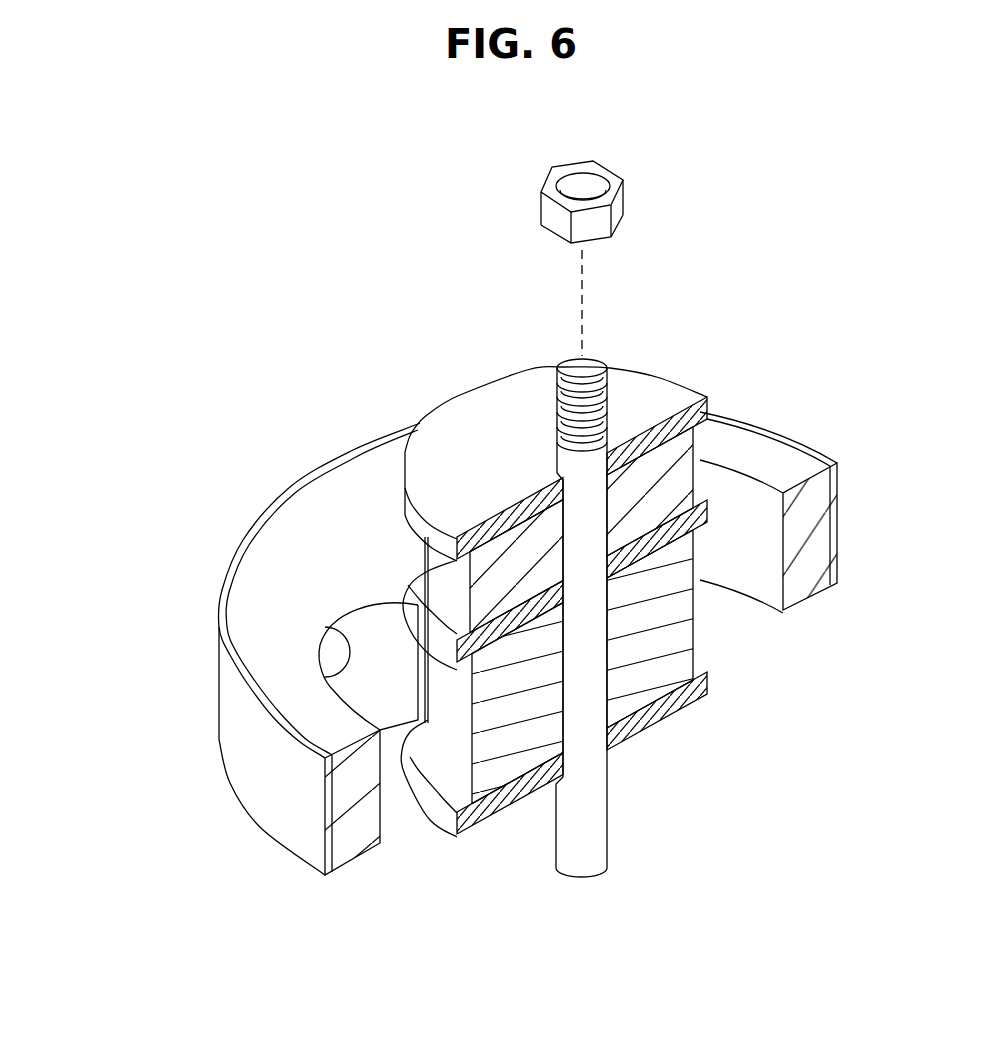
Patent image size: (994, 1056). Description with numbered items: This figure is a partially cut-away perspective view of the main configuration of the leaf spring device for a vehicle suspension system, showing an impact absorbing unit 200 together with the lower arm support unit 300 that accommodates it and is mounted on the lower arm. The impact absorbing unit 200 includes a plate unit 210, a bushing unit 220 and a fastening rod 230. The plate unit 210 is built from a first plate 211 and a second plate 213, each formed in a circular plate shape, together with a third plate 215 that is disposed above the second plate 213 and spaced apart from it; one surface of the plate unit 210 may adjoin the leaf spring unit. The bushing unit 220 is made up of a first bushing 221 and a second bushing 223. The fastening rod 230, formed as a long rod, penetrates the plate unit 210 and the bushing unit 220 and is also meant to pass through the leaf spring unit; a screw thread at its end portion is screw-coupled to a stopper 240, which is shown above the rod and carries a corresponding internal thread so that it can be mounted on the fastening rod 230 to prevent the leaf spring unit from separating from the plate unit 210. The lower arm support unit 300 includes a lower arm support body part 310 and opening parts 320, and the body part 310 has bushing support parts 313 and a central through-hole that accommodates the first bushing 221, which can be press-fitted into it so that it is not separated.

The impact absorbing unit 200 is at (683, 216).
The plate unit 210 is at (818, 318).
The first plate 211 is at (707, 683).
The second plate 213 is at (707, 497).
The third plate 215 is at (668, 391).
The bushing unit 220 is at (431, 306).
The first bushing 221 is at (497, 710).
The second bushing 223 is at (520, 575).
The fastening rod 230 is at (604, 362).
The stopper 240 is at (616, 172).
The lower arm support unit 300 is at (117, 653).
The lower arm support body part 310 is at (290, 563).
The bushing support part 313 is at (418, 667).
The opening part 320 is at (323, 680).